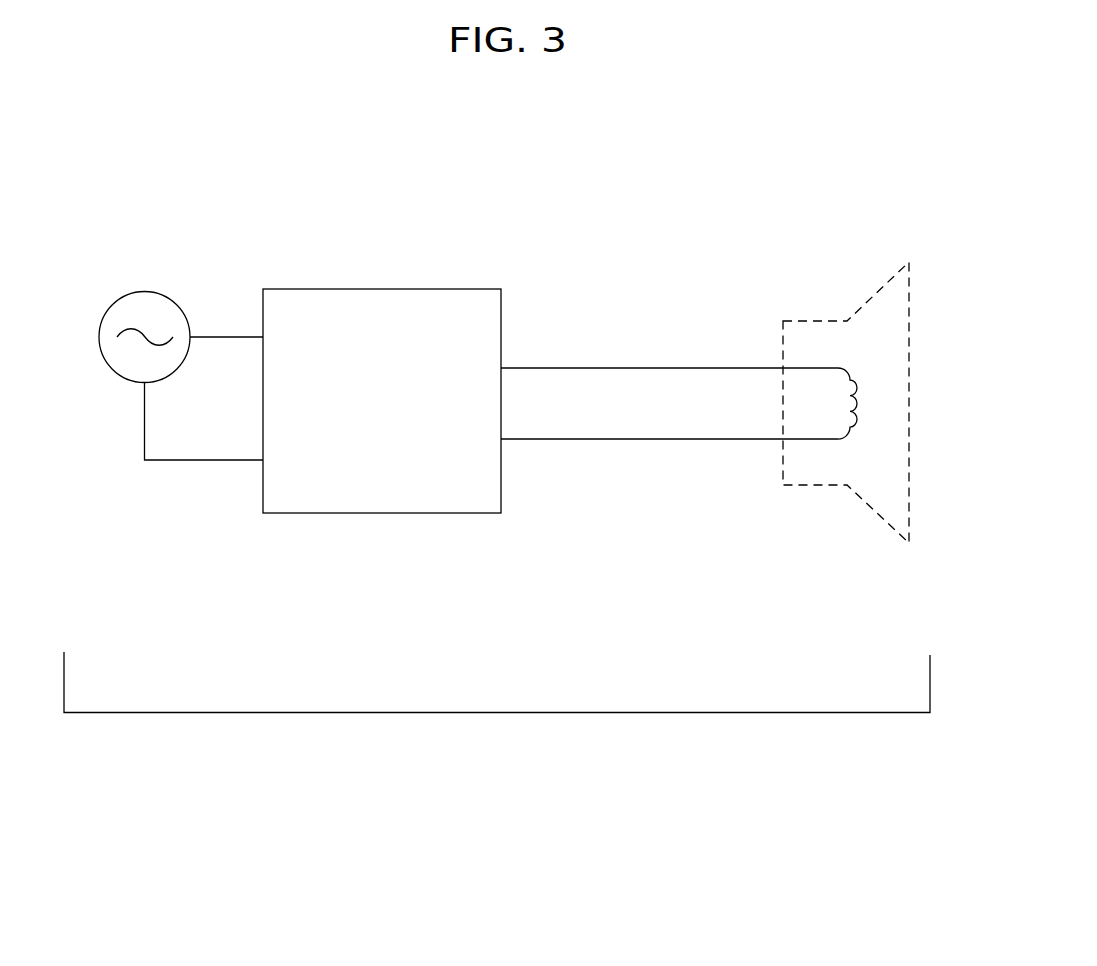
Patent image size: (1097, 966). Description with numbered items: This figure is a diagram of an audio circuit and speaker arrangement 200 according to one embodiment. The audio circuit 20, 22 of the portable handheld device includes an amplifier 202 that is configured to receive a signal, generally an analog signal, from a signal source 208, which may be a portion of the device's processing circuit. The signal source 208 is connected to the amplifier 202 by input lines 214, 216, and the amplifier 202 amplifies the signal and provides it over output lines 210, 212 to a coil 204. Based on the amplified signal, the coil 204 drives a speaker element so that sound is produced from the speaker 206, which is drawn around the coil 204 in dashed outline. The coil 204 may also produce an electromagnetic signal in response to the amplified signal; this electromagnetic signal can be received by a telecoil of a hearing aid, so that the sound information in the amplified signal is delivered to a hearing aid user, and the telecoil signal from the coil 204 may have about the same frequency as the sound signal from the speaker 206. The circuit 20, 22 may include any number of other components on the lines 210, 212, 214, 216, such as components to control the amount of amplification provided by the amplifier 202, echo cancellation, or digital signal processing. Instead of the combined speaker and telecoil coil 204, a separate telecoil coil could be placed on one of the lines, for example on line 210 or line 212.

The sound system 200 is at (708, 187).
The amplifier 202 is at (341, 535).
The coil 204 is at (824, 455).
The speaker 206 is at (868, 537).
The signal source 208 is at (155, 274).
The line 210 is at (643, 342).
The line 212 is at (619, 459).
The line 214 is at (228, 316).
The line 216 is at (176, 484).
The audio circuit 20 is at (497, 760).
The audio processing circuit 22 is at (475, 738).